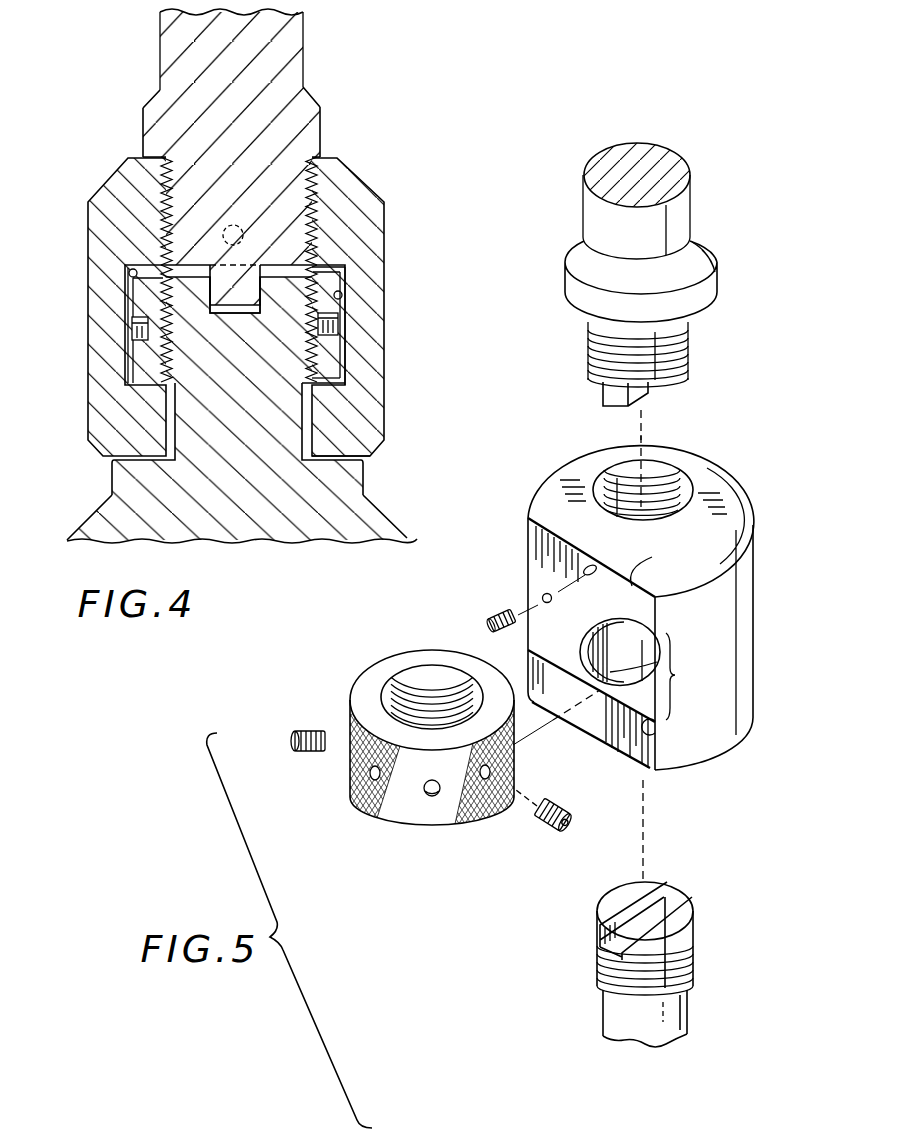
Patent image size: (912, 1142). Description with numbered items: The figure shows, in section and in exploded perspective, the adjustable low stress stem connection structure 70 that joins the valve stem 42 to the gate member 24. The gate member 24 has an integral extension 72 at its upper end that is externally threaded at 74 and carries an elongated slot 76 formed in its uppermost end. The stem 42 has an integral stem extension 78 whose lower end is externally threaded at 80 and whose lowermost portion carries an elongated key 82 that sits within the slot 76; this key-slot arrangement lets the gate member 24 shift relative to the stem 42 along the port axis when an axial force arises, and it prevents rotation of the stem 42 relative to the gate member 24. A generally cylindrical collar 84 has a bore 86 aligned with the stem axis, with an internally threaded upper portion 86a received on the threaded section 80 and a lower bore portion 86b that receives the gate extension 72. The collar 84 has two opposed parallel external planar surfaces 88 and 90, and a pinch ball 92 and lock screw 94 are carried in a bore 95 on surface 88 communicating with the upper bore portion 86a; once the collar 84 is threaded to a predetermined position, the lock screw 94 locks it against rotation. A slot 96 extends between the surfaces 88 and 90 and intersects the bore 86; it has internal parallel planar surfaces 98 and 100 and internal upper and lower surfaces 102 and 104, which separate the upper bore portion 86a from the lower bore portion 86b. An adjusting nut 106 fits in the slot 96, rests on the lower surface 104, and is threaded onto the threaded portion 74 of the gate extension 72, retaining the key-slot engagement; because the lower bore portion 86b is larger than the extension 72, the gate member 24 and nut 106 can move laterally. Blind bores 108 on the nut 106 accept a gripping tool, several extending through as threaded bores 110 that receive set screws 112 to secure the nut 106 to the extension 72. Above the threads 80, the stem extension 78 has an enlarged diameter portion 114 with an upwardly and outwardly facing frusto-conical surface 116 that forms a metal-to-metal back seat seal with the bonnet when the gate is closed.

In FIG. 4, the gate member 24 is at (363, 518).
In FIG. 4, the valve stem 42 is at (255, 40).
In FIG. 5, the valve stem 42 is at (646, 245).
In FIG. 4, the adjustable low stress stem connection structure 70 is at (400, 101).
In FIG. 4, the gate member extension 72 is at (226, 438).
In FIG. 5, the gate member extension 72 is at (623, 1012).
In FIG. 4, the externally threaded portion of gate extension 74 is at (162, 355).
In FIG. 5, the externally threaded portion of gate extension 74 is at (698, 942).
In FIG. 4, the elongated slot 76 is at (220, 308).
In FIG. 5, the elongated slot 76 is at (610, 940).
In FIG. 4, the stem extension 78 is at (246, 166).
In FIG. 5, the stem extension 78 is at (585, 338).
In FIG. 4, the externally threaded section of stem extension 80 is at (303, 213).
In FIG. 5, the externally threaded section of stem extension 80 is at (690, 353).
In FIG. 4, the elongated key 82 is at (225, 293).
In FIG. 5, the elongated key 82 is at (613, 388).
In FIG. 4, the collar 84 is at (117, 202).
In FIG. 5, the collar 84 is at (750, 567).
In FIG. 5, the bore 86 is at (662, 480).
In FIG. 4, the internally threaded upper bore portion 86a is at (310, 232).
In FIG. 5, the internally threaded upper bore portion 86a is at (628, 490).
In FIG. 4, the lower bore portion 86b is at (307, 440).
In FIG. 5, the lower bore portion 86b is at (627, 638).
In FIG. 5, the external planar surface 88 is at (653, 566).
In FIG. 5, the external planar surface 90 is at (733, 505).
In FIG. 5, the pinch ball 92 is at (541, 597).
In FIG. 5, the lock screw 94 is at (490, 622).
In FIG. 5, the bore 95 is at (583, 567).
In FIG. 5, the slot 96 is at (689, 676).
In FIG. 4, the internal planar surface 98 is at (132, 270).
In FIG. 5, the internal planar surface 98 is at (580, 622).
In FIG. 4, the internal planar surface 100 is at (343, 300).
In FIG. 5, the internal planar surface 100 is at (658, 734).
In FIG. 4, the internal upper surface 102 is at (340, 272).
In FIG. 5, the internal upper surface 102 is at (536, 569).
In FIG. 4, the internal lower surface 104 is at (350, 382).
In FIG. 5, the internal lower surface 104 is at (567, 699).
In FIG. 4, the adjusting nut 106 is at (327, 352).
In FIG. 5, the adjusting nut 106 is at (352, 767).
In FIG. 4, the blind bores 108 is at (133, 326).
In FIG. 5, the blind bores 108 is at (368, 797).
In FIG. 4, the internally threaded bores 110 is at (340, 322).
In FIG. 5, the internally threaded bores 110 is at (490, 774).
In FIG. 4, the set screws 112 is at (338, 330).
In FIG. 5, the set screws 112 is at (295, 741).
In FIG. 4, the enlarged diameter portion 114 is at (307, 135).
In FIG. 5, the enlarged diameter portion 114 is at (607, 308).
In FIG. 4, the frusto-conical surface 116 is at (313, 97).
In FIG. 5, the frusto-conical surface 116 is at (683, 258).